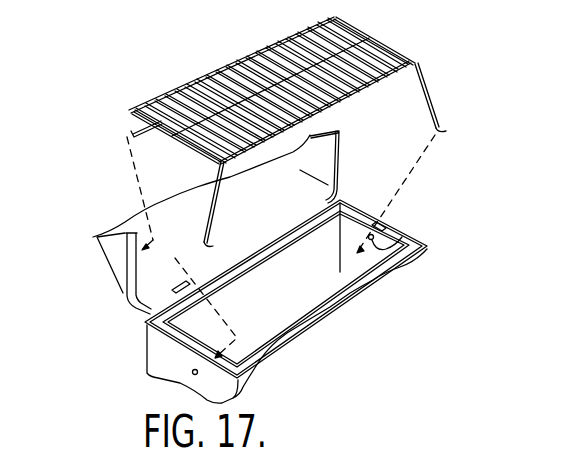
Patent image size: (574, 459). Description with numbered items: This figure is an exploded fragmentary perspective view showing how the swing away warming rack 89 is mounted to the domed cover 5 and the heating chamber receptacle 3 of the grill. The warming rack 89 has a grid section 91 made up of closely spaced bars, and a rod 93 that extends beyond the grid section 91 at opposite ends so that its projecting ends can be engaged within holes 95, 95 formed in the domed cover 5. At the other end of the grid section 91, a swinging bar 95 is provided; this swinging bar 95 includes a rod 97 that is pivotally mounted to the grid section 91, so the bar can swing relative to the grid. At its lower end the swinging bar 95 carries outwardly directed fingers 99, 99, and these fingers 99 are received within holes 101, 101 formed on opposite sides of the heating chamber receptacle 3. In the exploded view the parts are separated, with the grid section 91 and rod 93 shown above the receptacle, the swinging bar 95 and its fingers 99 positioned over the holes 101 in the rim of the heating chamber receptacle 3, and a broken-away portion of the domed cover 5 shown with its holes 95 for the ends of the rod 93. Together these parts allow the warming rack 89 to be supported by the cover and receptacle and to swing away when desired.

The heating chamber receptacle 3 is at (148, 357).
The domed cover 5 is at (94, 237).
The swing away warming rack 89 is at (321, 84).
The grid section 91 is at (421, 63).
The rod 93 is at (377, 23).
The swinging bar 95 is at (429, 94).
The rod 97 is at (364, 95).
The outwardly directed fingers 99 is at (443, 129).
The holes 101 is at (192, 374).